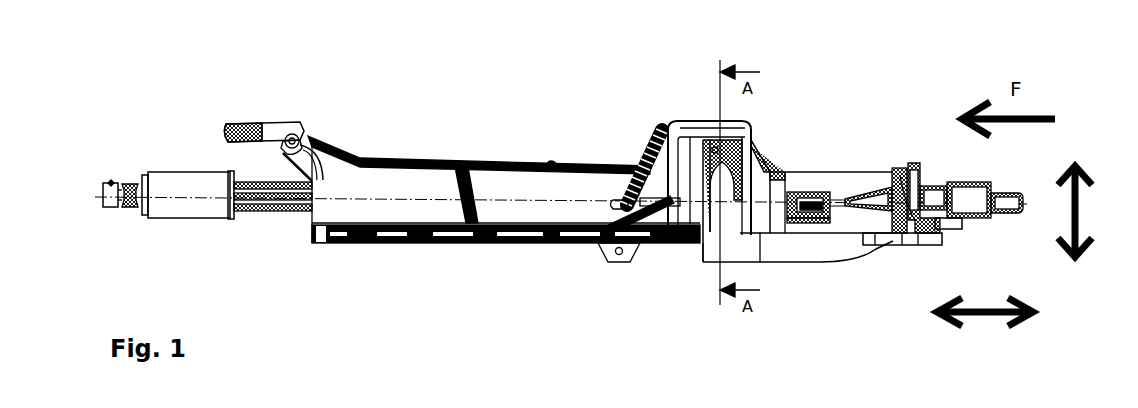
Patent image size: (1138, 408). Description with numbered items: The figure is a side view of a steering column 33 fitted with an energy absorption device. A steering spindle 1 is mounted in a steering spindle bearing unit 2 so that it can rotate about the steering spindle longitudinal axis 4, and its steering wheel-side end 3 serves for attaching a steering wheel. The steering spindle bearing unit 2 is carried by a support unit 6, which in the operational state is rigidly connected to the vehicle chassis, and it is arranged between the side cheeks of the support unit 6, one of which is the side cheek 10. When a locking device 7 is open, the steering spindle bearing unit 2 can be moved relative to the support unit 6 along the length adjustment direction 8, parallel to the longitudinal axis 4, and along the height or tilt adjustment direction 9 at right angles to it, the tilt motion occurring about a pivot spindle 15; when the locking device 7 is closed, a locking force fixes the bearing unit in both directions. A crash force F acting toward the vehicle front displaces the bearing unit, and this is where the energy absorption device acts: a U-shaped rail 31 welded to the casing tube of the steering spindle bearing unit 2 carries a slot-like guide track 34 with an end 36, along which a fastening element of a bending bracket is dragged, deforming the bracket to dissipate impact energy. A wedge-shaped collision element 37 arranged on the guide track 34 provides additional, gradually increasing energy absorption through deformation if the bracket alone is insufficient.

The steering spindle 1 is at (956, 190).
The steering spindle bearing unit 2 is at (810, 168).
The steering wheel-side end 3 is at (1020, 207).
The steering spindle longitudinal axis 4 is at (966, 205).
The support unit 6 is at (686, 119).
The locking device 7 is at (741, 150).
The length adjustment direction 8 is at (979, 307).
The height or tilt adjustment direction 9 is at (1080, 208).
The side cheek 10 is at (691, 228).
The pivot spindle 15 is at (300, 138).
The rail 31 is at (824, 212).
The steering column 33 is at (896, 148).
The guide track 34 is at (792, 223).
The end 36 is at (818, 221).
The collision element 37 is at (808, 210).